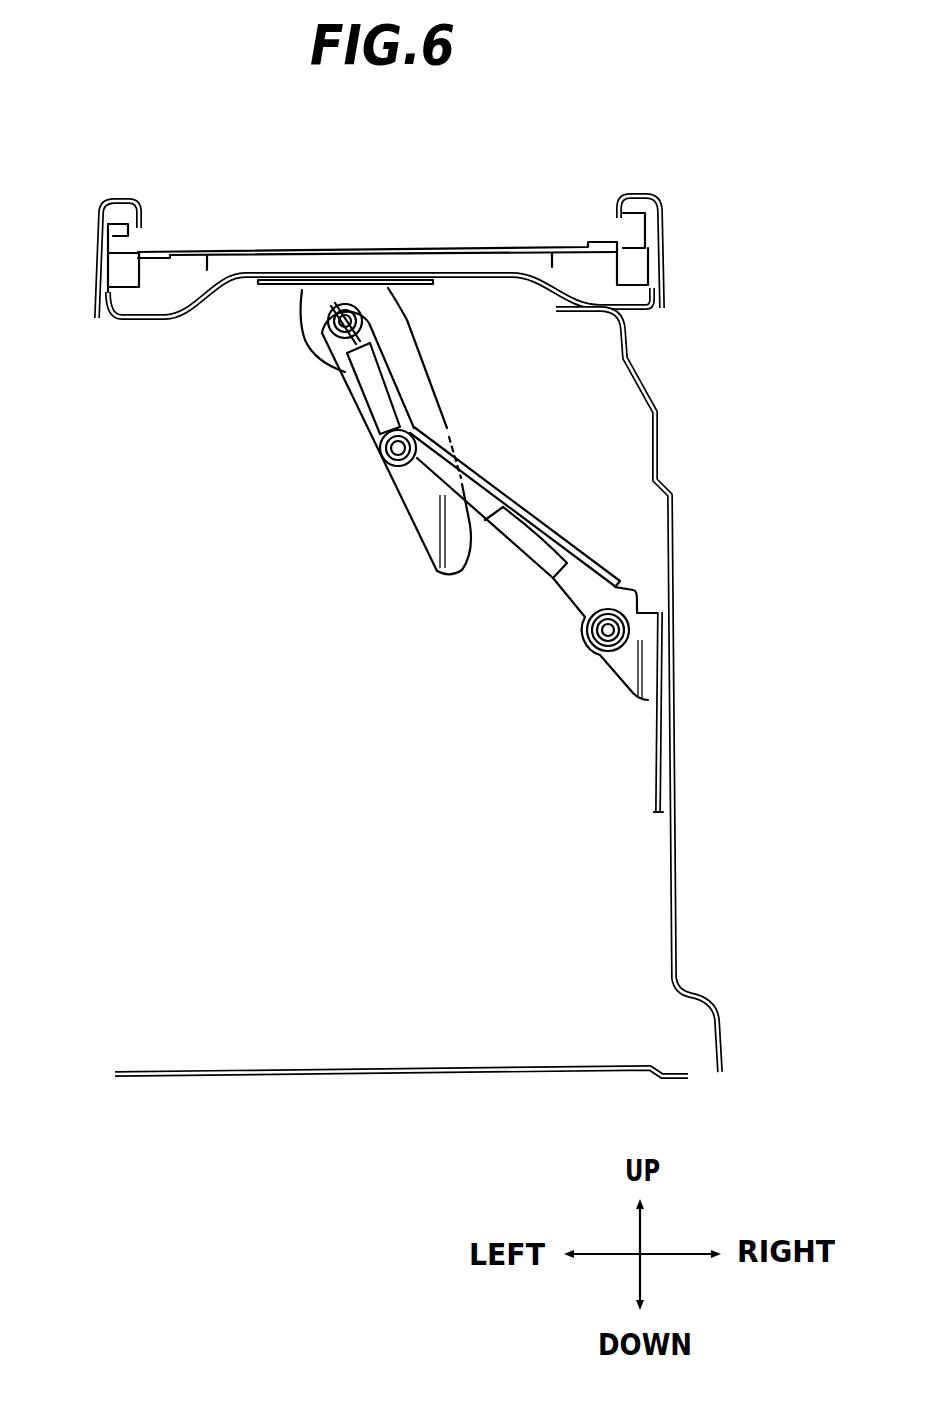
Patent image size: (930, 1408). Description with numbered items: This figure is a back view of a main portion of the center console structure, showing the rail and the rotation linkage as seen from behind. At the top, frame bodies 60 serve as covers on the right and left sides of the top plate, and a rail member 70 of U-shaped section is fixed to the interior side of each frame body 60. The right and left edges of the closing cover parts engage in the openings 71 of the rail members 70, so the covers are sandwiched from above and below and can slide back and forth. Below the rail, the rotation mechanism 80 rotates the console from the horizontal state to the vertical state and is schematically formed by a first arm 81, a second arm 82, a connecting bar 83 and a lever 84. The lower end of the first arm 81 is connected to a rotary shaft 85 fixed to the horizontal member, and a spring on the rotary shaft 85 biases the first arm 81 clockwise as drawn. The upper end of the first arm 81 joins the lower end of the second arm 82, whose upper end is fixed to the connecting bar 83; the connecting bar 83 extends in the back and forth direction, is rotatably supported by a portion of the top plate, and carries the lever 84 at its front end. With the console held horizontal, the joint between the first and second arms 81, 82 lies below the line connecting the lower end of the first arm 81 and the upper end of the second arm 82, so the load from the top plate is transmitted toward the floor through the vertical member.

The frame body 60 is at (122, 200).
The rail member 70 is at (108, 242).
The opening 71 is at (130, 238).
The rotation mechanism 80 is at (496, 494).
The first arm 81 is at (577, 603).
The second arm 82 is at (370, 394).
The connecting bar 83 is at (355, 322).
The lever 84 is at (437, 553).
The rotary shaft 85 is at (614, 629).